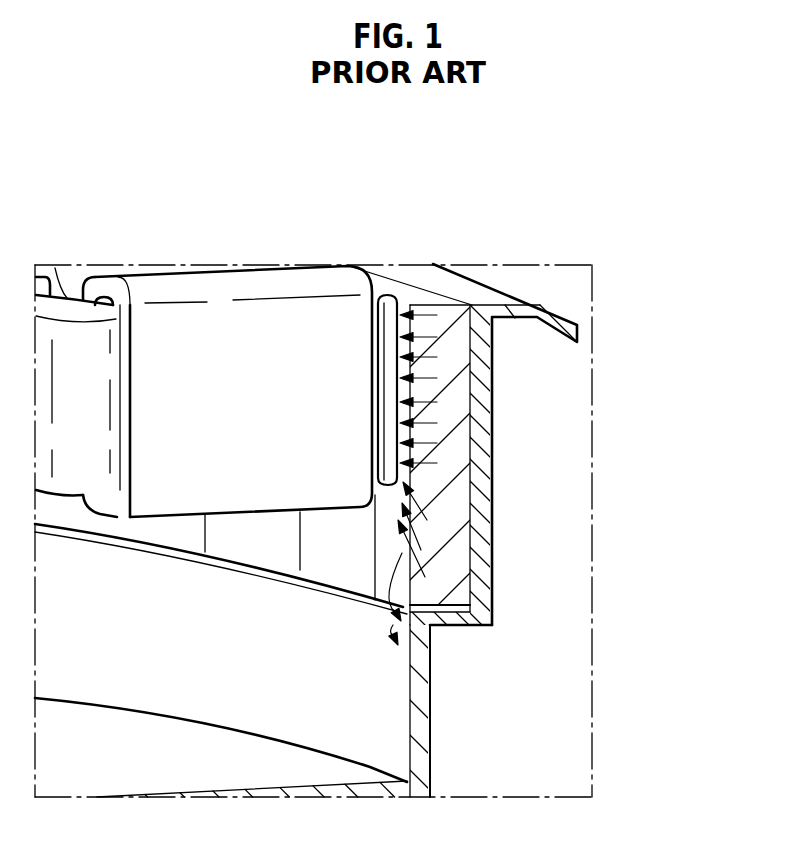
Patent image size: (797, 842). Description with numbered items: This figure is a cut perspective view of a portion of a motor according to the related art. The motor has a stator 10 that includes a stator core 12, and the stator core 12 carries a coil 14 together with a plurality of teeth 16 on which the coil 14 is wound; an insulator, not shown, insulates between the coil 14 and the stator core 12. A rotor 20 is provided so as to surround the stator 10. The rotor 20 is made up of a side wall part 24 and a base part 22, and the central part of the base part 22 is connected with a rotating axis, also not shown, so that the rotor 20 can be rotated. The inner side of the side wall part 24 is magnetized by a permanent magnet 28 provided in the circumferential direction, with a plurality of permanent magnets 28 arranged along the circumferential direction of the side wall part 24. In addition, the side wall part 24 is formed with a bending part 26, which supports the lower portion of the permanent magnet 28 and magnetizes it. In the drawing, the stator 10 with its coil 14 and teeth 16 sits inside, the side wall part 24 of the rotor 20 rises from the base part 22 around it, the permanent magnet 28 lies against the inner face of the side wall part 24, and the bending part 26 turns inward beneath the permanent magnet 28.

The stator 10 is at (90, 180).
The stator core 12 is at (73, 347).
The coil 14 is at (212, 332).
The teeth 16 is at (390, 345).
The rotor 20 is at (683, 413).
The base part 22 is at (302, 768).
The side wall part 24 is at (417, 702).
The bending part 26 is at (445, 622).
The permanent magnet 28 is at (453, 416).